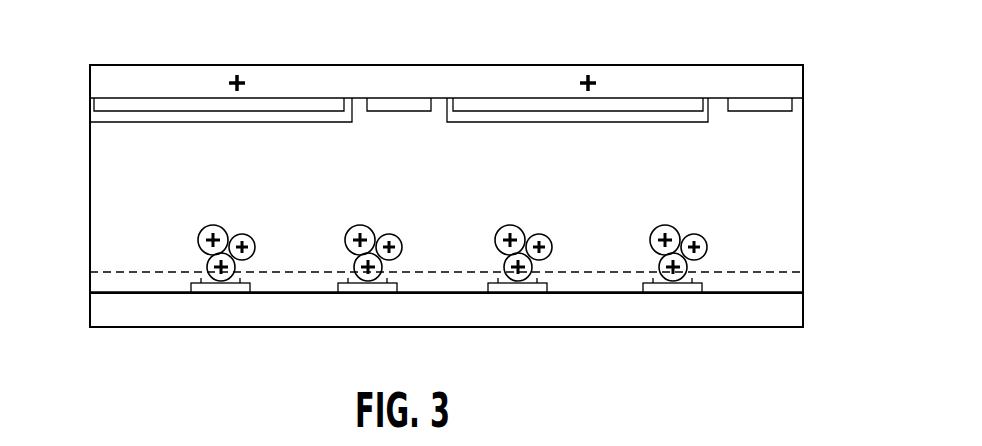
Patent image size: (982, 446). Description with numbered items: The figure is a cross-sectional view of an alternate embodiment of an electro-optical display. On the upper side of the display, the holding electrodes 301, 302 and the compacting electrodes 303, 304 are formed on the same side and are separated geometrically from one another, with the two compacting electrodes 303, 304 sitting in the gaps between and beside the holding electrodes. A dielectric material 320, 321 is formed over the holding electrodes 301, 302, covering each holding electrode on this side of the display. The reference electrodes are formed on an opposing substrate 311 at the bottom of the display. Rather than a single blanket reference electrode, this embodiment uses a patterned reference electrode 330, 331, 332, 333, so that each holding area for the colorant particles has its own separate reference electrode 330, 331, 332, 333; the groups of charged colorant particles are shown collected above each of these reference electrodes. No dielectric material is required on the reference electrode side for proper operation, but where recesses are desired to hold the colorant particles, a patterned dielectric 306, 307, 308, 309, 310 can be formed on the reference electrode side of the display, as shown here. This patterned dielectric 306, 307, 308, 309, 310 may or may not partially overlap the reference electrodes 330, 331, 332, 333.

The holding electrode 301 is at (118, 105).
The holding electrode 302 is at (654, 105).
The compacting electrode 303 is at (397, 105).
The compacting electrode 304 is at (770, 105).
The dielectric material 320 is at (123, 117).
The dielectric material 321 is at (467, 118).
The patterned dielectric 306 is at (797, 280).
The patterned dielectric 307 is at (568, 282).
The patterned dielectric 308 is at (421, 282).
The patterned dielectric 309 is at (272, 282).
The patterned dielectric 310 is at (96, 277).
The opposing substrate 311 is at (787, 317).
The reference electrode 330 is at (652, 293).
The reference electrode 331 is at (533, 293).
The reference electrode 332 is at (347, 293).
The reference electrode 333 is at (240, 293).